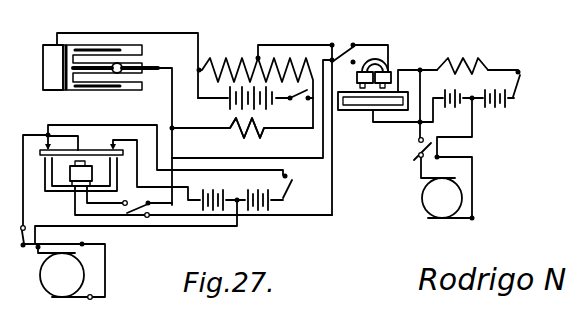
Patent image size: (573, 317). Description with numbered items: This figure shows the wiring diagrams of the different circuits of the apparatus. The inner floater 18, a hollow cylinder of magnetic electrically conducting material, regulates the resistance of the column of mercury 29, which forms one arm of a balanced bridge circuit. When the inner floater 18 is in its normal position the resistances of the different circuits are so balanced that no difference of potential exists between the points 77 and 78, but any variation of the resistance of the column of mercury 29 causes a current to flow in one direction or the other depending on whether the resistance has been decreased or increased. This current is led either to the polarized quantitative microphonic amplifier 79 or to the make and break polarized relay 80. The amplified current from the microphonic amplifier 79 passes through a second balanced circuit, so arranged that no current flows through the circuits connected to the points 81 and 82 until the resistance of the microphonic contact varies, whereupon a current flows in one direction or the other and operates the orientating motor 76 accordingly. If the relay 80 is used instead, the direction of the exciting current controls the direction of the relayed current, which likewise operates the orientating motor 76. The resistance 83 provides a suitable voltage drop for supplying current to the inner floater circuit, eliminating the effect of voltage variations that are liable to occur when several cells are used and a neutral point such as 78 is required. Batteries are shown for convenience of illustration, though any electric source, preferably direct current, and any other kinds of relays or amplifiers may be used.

The inner floater 18 is at (73, 89).
The central conduit 29 is at (104, 73).
The orientating motor 76 is at (251, 237).
The point 77 is at (221, 139).
The point 78 is at (303, 42).
The polarized quantitative microphonic amplifier 79 is at (368, 99).
The make and break polarized relay 80 is at (57, 188).
The point 81 is at (448, 62).
The point 82 is at (474, 103).
The resistance 83 is at (223, 54).